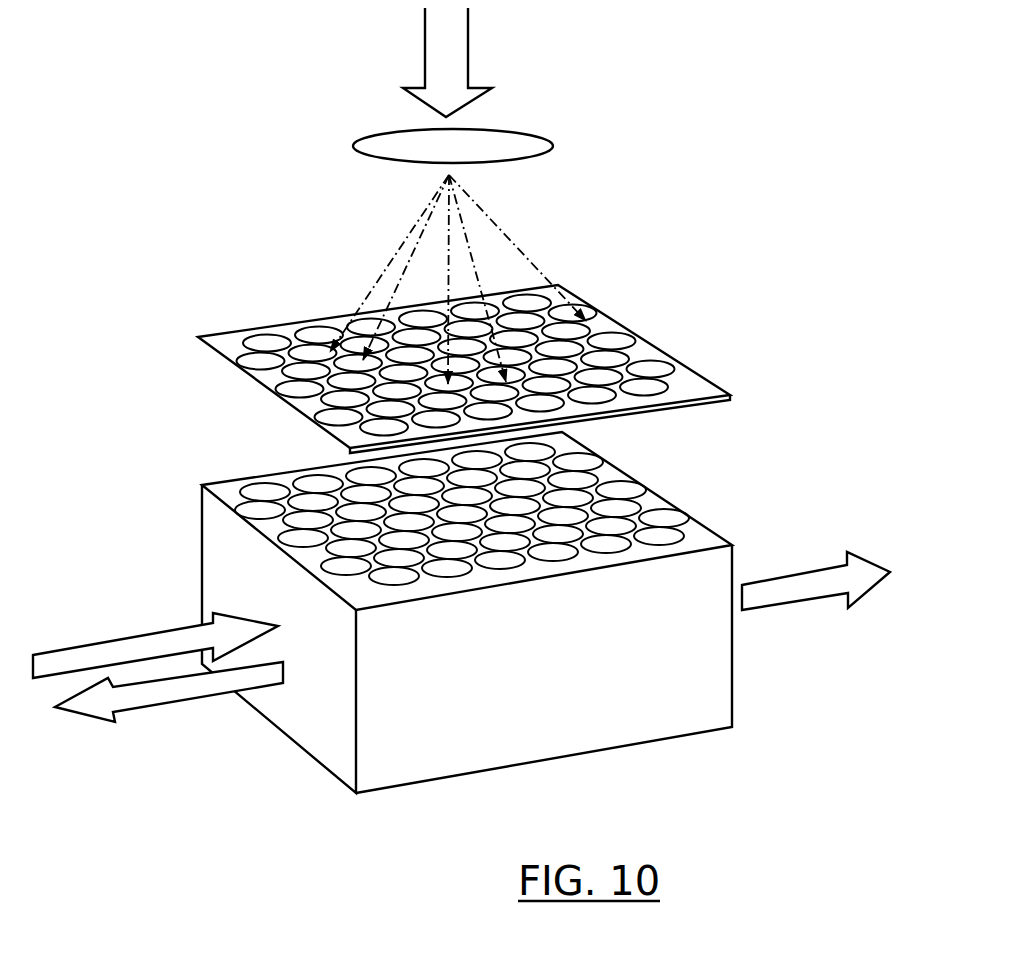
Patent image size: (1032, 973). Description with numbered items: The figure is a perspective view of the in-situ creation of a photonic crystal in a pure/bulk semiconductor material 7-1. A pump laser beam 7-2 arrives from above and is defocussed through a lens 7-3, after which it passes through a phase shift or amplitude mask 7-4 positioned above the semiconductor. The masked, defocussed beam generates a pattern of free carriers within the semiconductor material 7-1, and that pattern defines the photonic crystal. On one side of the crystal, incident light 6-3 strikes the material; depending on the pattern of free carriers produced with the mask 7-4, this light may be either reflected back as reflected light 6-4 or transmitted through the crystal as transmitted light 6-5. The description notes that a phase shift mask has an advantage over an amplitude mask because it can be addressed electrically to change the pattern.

The pure/bulk semiconductor material 7-1 is at (573, 758).
The laser beam 7-2 is at (468, 60).
The lens 7-3 is at (543, 133).
The phase shift or amplitude mask 7-4 is at (713, 383).
The incident light 6-3 is at (120, 637).
The reflected light 6-4 is at (102, 723).
The transmitted light 6-5 is at (806, 568).